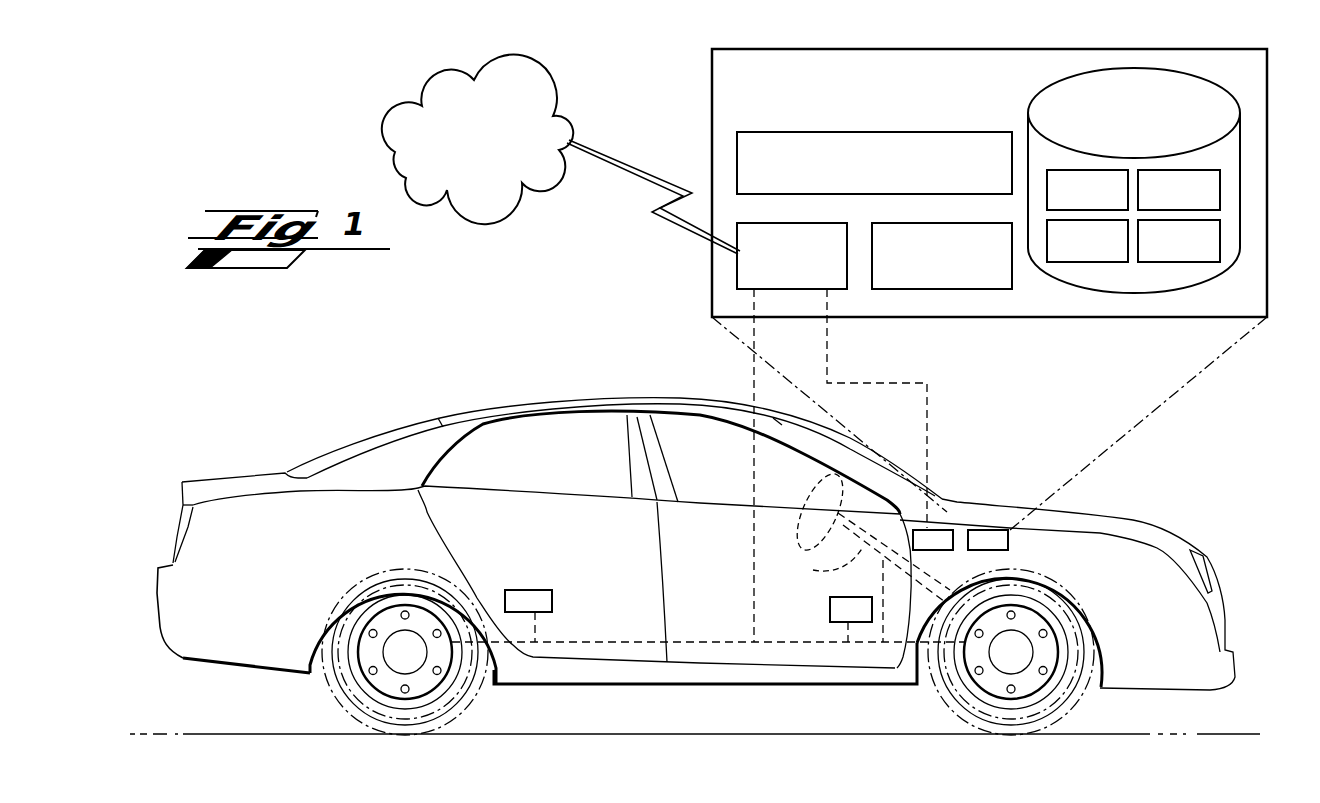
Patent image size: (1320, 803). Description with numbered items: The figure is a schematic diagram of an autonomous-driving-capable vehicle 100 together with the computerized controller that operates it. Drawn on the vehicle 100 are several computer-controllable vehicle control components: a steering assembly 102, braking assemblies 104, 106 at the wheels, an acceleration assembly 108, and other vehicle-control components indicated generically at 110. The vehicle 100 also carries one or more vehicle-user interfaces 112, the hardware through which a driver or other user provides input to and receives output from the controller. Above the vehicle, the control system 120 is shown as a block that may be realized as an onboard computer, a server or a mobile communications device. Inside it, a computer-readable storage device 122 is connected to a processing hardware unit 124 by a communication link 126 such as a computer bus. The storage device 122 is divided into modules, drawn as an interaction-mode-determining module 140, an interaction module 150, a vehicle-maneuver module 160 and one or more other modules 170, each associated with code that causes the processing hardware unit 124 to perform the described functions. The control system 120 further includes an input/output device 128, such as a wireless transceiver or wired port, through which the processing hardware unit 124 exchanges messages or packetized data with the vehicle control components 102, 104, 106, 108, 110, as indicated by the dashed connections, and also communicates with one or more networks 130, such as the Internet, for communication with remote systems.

The autonomous-driving-capable vehicle 100 is at (257, 420).
The steering assembly 102 is at (815, 524).
The braking assembly 104 is at (370, 663).
The braking assembly 106 is at (1047, 683).
The acceleration assembly 108 is at (850, 622).
The vehicle-control components 110 is at (552, 599).
The vehicle-user interface 112 is at (935, 530).
The control system 120 is at (853, 99).
The computer-readable storage device 122 is at (1123, 127).
The processing hardware unit 124 is at (923, 266).
The communication link 126 is at (853, 171).
The input/output device 128 is at (769, 266).
The network 130 is at (461, 145).
The interaction-mode-determining module 140 is at (1071, 204).
The interaction module 150 is at (1163, 204).
The vehicle-maneuver module 160 is at (1071, 252).
The other modules 170 is at (1163, 252).